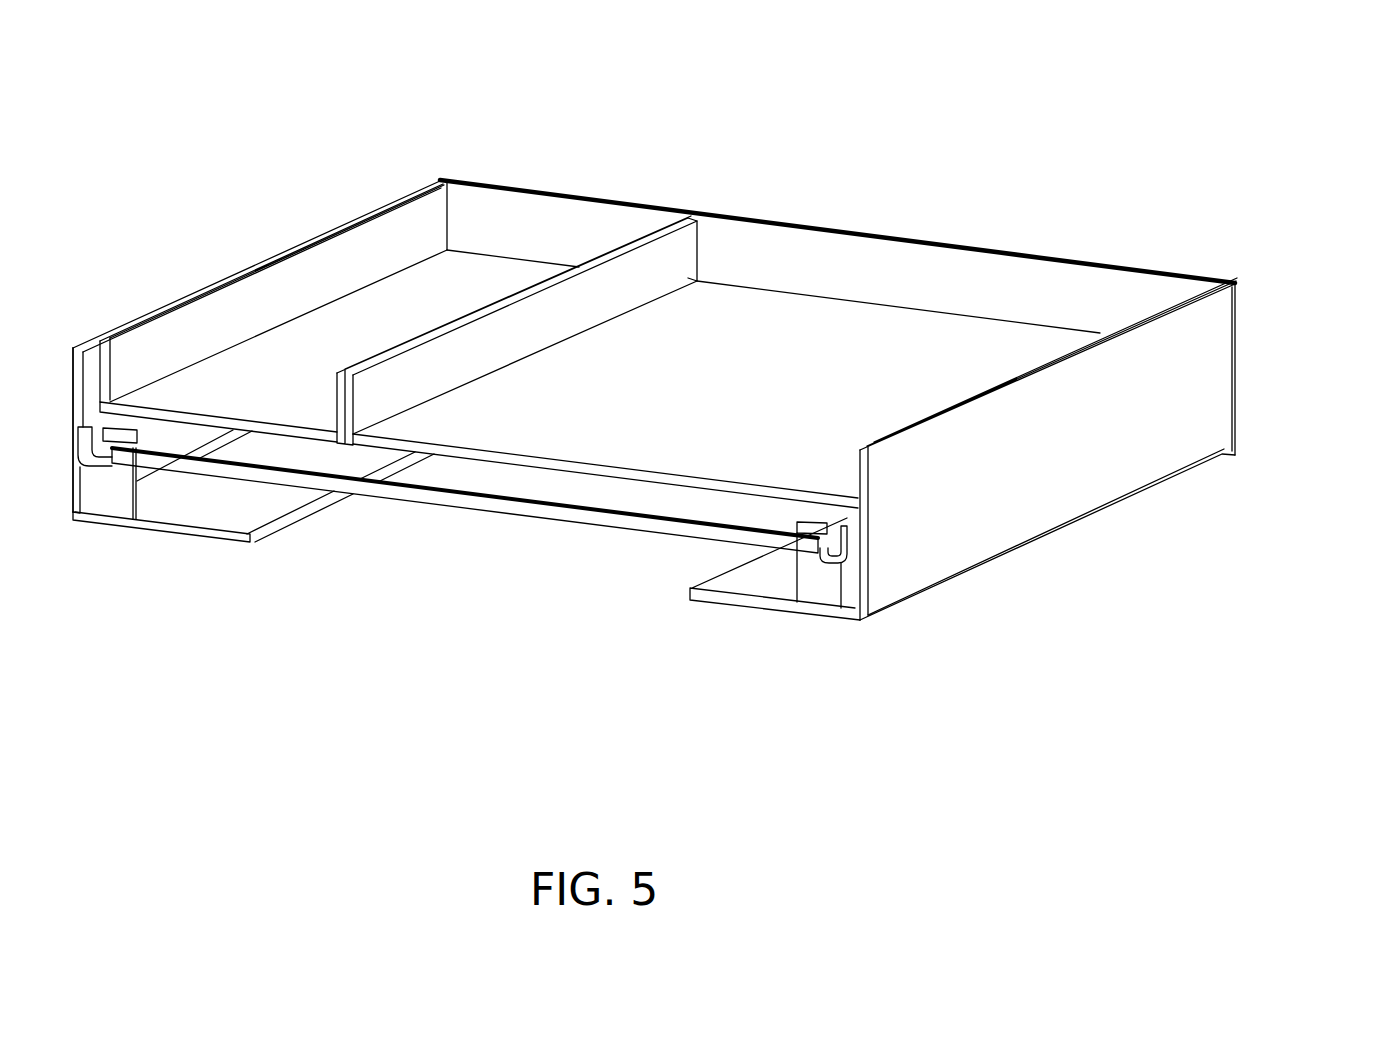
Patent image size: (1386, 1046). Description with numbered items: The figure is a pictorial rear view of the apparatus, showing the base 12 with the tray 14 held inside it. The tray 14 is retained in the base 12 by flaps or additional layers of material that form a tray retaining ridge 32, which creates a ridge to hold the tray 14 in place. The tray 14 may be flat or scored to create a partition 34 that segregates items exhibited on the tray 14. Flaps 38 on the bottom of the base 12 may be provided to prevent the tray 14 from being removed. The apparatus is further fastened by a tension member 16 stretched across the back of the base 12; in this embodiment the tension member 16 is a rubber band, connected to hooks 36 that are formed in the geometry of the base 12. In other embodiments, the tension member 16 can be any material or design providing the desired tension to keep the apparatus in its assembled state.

The base 12 is at (1240, 347).
The tray 14 is at (943, 327).
The tension member 16 is at (406, 503).
The tray retaining ridge 32 is at (487, 208).
The divider 34 is at (674, 247).
The hooks 36 is at (97, 467).
The flaps 38 is at (193, 538).